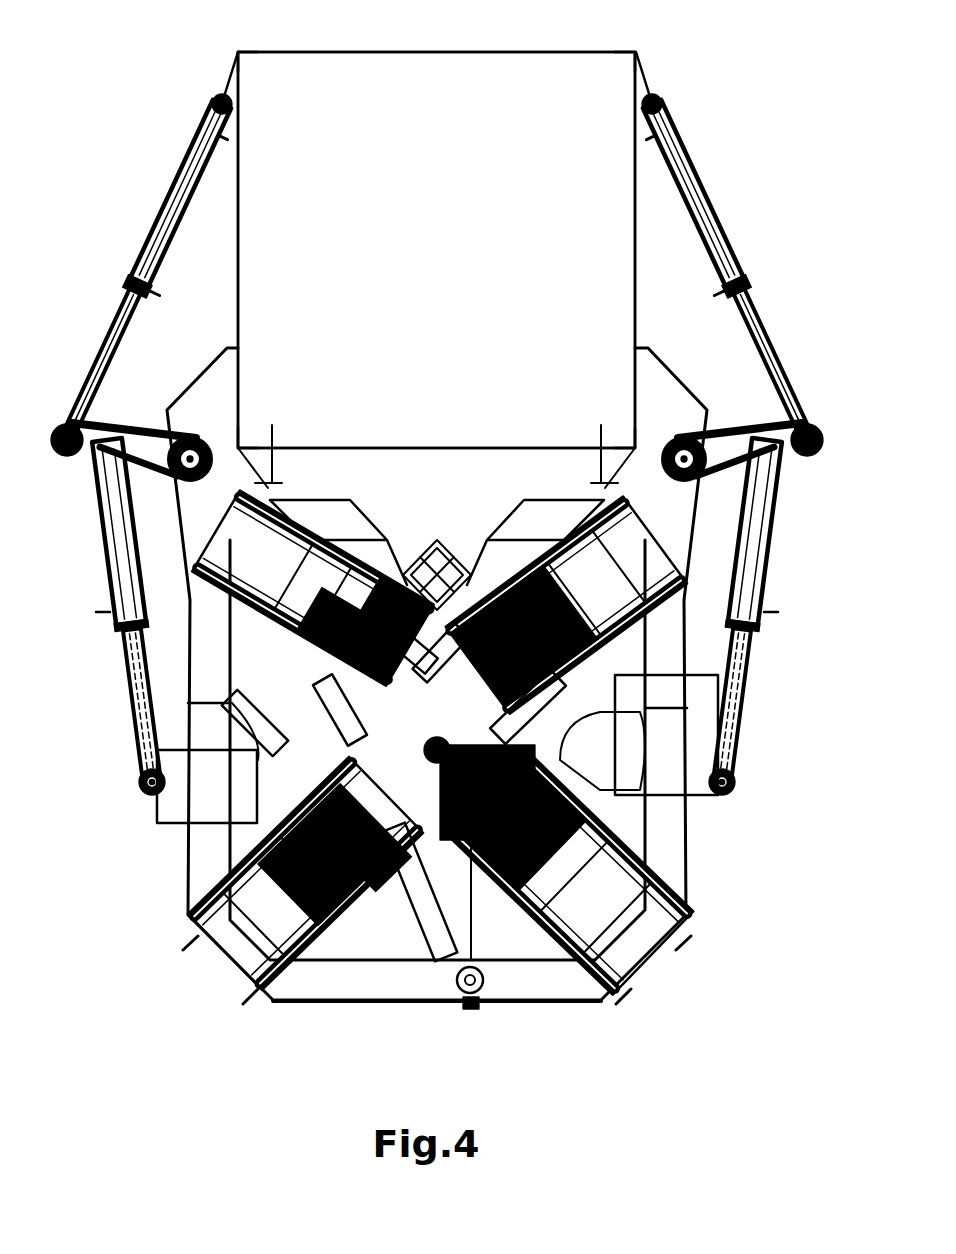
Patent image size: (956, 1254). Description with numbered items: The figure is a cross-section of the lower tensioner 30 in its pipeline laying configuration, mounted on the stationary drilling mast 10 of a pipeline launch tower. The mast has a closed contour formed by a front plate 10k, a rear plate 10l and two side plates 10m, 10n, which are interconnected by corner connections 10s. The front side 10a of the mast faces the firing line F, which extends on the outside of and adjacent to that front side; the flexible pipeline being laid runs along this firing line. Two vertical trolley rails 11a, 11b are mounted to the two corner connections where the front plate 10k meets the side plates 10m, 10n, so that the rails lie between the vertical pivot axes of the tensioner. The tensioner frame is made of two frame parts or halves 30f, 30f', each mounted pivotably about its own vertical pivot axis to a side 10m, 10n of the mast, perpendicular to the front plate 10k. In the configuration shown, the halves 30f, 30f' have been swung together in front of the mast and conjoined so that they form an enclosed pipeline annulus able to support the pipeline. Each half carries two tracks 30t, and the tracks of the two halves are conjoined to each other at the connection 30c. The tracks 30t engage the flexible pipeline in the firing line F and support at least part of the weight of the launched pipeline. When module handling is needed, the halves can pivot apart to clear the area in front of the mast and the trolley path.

The drilling mast 10 is at (436, 250).
The rear plate 10l is at (452, 52).
The side plate 10m is at (243, 245).
The side plate 10n is at (633, 245).
The front plate 10k is at (412, 447).
The corner connections 10s is at (250, 60).
The front side of the drilling mast 10a is at (395, 455).
The vertical trolley rail 11a is at (257, 462).
The vertical trolley rail 11b is at (616, 464).
The tensioner 30 is at (125, 838).
The tensioner frame part 30f is at (550, 619).
The tensioner frame part 30f' is at (315, 624).
The tracks 30t is at (377, 742).
The connection 30c is at (443, 1005).
The firing line F is at (437, 740).